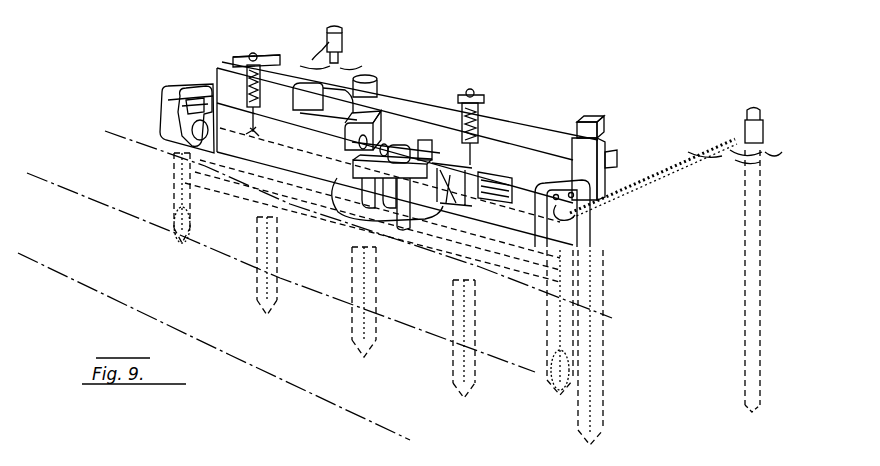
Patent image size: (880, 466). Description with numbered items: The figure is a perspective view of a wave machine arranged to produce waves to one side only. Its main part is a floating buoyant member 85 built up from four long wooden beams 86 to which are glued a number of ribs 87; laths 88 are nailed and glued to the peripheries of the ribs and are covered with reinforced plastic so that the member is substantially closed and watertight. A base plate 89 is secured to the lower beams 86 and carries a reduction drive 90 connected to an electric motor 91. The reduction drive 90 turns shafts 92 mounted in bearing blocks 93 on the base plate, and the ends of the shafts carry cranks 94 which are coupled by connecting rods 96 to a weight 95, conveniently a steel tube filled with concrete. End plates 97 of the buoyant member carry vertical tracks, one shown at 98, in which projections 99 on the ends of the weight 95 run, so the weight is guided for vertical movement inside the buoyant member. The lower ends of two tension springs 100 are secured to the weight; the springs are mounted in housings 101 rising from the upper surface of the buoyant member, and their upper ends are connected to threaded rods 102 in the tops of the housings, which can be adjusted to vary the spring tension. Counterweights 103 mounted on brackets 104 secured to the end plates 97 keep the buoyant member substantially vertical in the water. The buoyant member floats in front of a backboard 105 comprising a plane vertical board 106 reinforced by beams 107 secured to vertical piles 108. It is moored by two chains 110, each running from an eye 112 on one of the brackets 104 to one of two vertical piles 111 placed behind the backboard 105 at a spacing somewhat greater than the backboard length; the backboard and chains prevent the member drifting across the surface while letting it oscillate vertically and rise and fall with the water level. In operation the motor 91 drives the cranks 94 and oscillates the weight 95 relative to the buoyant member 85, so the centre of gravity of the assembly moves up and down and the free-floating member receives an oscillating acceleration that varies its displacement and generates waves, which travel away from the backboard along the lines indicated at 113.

The buoyant member 85 is at (183, 140).
The wooden beams 86 is at (403, 148).
The ribs 87 is at (387, 221).
The laths 88 is at (498, 193).
The base plate 89 is at (388, 130).
The reduction drive 90 is at (362, 72).
The electric motor 91 is at (325, 101).
The shafts 92 is at (434, 140).
The bearing blocks 93 is at (422, 140).
The cranks 94 is at (273, 77).
The weight 95 is at (406, 230).
The connecting rods 96 is at (300, 130).
The end plates 97 is at (583, 193).
The vertical track 98 is at (197, 90).
The projections 99 is at (183, 120).
The tension springs 100 is at (228, 67).
The housings 101 is at (480, 150).
The threaded rods 102 is at (253, 57).
The counterweights 103 is at (176, 236).
The brackets 104 is at (173, 195).
The backboard 105 is at (549, 123).
The plane vertical board 106 is at (585, 143).
The beams 107 is at (610, 158).
The vertical piles 108 is at (590, 121).
The chains 110 is at (732, 142).
The vertical piles 111 is at (326, 36).
The eye 112 is at (587, 230).
The wave lines 113 is at (118, 145).